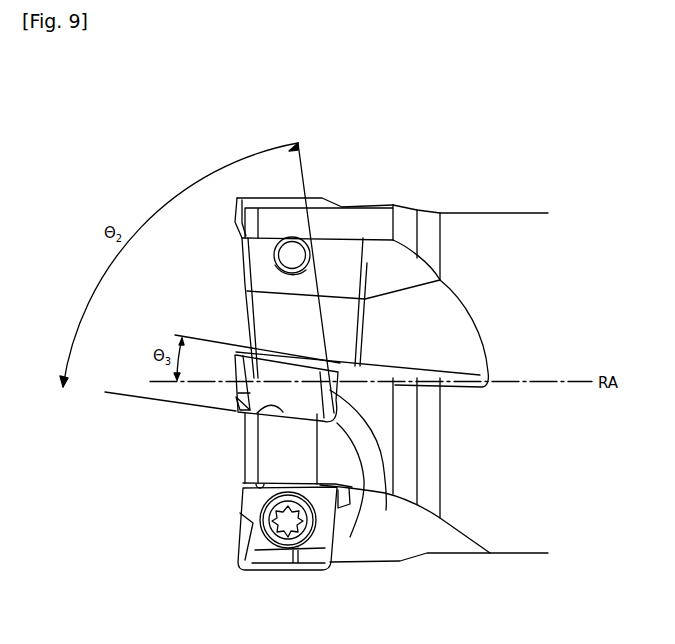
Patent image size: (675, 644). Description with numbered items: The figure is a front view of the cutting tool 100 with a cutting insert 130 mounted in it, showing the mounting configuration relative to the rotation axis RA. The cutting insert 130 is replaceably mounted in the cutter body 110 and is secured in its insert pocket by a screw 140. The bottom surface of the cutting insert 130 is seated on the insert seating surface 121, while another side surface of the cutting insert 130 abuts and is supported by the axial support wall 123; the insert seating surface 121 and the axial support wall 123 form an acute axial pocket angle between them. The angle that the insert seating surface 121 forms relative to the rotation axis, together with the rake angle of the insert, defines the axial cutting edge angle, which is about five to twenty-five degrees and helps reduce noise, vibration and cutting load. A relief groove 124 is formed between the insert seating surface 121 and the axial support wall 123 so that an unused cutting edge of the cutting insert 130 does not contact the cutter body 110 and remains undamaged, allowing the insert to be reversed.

The cutting tool 100 is at (422, 131).
The cutter body 110 is at (505, 211).
The insert seating surface 121 is at (258, 413).
The axial support wall 123 is at (386, 510).
The relief groove 124 is at (350, 537).
The cutting insert 130 is at (236, 399).
The screw 140 is at (290, 540).